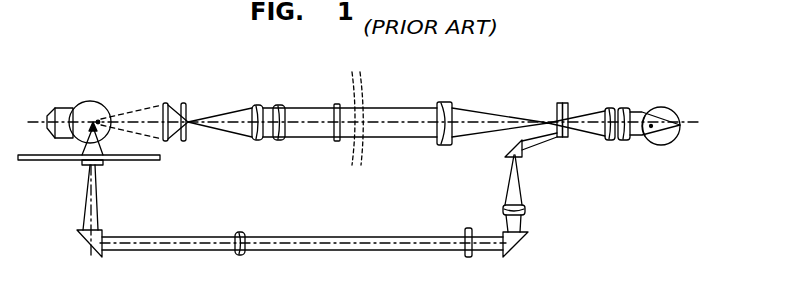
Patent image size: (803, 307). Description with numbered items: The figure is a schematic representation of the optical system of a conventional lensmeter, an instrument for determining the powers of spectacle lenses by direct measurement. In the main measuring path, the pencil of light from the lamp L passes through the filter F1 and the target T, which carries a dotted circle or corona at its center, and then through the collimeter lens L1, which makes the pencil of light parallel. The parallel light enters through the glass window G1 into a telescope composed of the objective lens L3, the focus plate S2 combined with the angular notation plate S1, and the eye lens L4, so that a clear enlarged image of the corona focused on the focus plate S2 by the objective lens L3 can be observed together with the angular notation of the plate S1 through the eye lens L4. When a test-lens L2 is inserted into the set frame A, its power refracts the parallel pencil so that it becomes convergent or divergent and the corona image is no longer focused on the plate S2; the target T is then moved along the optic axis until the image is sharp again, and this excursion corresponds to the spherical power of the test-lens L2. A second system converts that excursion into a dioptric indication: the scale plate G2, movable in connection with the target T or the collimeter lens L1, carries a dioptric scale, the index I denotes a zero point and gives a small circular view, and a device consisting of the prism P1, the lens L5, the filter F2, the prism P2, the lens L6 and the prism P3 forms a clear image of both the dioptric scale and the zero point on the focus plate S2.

The lamp L is at (88, 101).
The filter F1 is at (165, 103).
The target T is at (183, 103).
The collimeter lens L1 is at (286, 101).
The glass window G1 is at (336, 103).
The set frame A is at (352, 107).
The test-lens L2 is at (358, 70).
The objective lens L3 is at (446, 101).
The angular notation plate S1 is at (558, 103).
The focus plate S2 is at (566, 103).
The eye lens L4 is at (631, 104).
The scale plate G2 is at (50, 160).
The index I is at (85, 168).
The prism P1 is at (89, 245).
The lens L5 is at (241, 257).
The filter F2 is at (467, 258).
The prism P2 is at (518, 252).
The lens L6 is at (526, 210).
The prism P3 is at (523, 151).